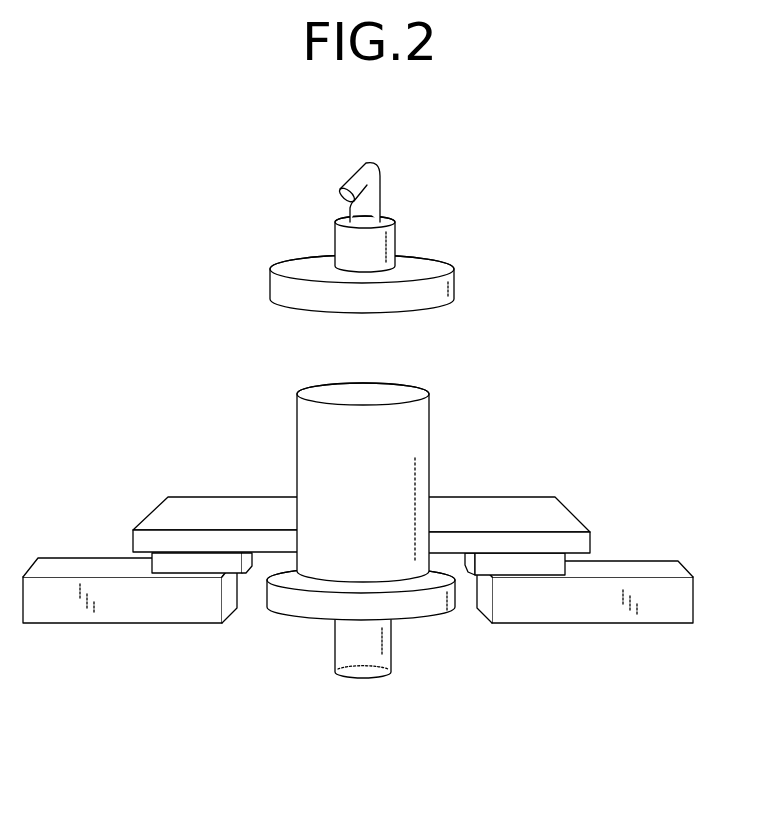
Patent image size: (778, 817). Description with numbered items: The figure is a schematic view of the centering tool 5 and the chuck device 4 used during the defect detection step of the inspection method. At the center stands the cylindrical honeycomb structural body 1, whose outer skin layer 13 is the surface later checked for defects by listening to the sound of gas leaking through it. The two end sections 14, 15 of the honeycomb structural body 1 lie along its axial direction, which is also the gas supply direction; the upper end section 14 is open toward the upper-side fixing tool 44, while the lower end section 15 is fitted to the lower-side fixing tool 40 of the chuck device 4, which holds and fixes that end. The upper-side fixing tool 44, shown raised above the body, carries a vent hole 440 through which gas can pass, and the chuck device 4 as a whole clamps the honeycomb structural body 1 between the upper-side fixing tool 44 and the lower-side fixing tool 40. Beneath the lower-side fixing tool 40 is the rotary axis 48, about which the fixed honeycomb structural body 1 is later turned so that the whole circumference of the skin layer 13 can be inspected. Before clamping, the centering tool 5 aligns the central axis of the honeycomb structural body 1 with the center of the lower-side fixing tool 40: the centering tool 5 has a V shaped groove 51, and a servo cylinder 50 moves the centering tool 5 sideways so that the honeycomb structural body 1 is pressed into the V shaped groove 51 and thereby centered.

The honeycomb structural body 1 is at (365, 425).
The chuck device 4 is at (362, 457).
The centering tool 5 is at (190, 505).
The skin layer 13 is at (322, 450).
The end section 14 is at (368, 392).
The end section 15 is at (313, 590).
The lower-side fixing tool 40 is at (389, 637).
The upper-side fixing tool 44 is at (319, 230).
The rotary axis 48 is at (373, 665).
The servo cylinder 50 is at (148, 607).
The V shaped groove 51 is at (433, 514).
The vent hole 440 is at (343, 197).